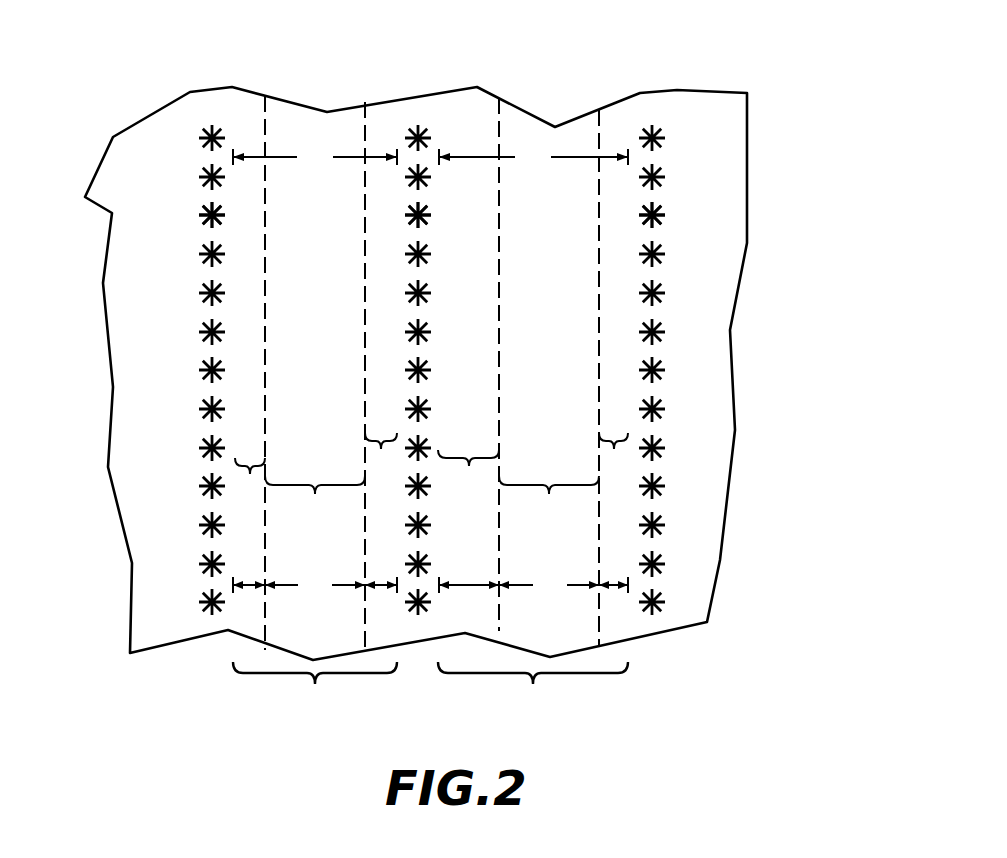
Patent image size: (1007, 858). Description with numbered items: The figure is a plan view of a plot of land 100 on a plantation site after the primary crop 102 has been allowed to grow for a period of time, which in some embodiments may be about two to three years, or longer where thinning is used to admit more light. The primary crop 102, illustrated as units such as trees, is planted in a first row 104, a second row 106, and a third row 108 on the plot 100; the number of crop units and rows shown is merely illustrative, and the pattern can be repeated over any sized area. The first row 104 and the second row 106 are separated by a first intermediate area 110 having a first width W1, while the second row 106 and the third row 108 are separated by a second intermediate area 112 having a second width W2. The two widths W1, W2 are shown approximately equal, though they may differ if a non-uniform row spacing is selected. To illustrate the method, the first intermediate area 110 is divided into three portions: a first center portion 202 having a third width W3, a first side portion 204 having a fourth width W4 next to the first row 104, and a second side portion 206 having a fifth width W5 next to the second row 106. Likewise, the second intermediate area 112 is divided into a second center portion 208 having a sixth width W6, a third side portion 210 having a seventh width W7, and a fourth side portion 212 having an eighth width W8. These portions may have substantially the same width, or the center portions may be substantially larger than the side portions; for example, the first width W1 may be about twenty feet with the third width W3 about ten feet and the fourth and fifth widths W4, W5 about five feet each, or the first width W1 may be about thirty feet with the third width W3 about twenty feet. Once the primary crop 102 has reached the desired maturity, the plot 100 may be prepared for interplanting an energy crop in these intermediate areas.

The plot of land 100 is at (792, 58).
The primary crop 102 is at (205, 212).
The first row 104 is at (211, 106).
The second row 106 is at (417, 106).
The third row 108 is at (651, 103).
The first intermediate area 110 is at (315, 687).
The second intermediate area 112 is at (533, 687).
The first center portion 202 is at (315, 496).
The first side portion 204 is at (248, 480).
The second side portion 206 is at (384, 453).
The second center portion 208 is at (549, 496).
The third side portion 210 is at (468, 470).
The fourth side portion 212 is at (618, 453).
The first width W1 is at (315, 158).
The second width W2 is at (533, 158).
The third width W3 is at (315, 586).
The fourth width W4 is at (248, 575).
The fifth width W5 is at (382, 575).
The sixth width W6 is at (549, 586).
The seventh width W7 is at (469, 577).
The eighth width W8 is at (616, 575).